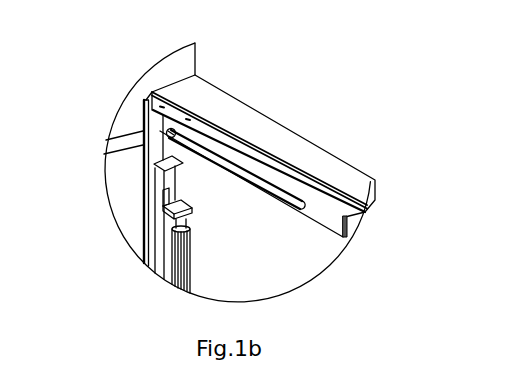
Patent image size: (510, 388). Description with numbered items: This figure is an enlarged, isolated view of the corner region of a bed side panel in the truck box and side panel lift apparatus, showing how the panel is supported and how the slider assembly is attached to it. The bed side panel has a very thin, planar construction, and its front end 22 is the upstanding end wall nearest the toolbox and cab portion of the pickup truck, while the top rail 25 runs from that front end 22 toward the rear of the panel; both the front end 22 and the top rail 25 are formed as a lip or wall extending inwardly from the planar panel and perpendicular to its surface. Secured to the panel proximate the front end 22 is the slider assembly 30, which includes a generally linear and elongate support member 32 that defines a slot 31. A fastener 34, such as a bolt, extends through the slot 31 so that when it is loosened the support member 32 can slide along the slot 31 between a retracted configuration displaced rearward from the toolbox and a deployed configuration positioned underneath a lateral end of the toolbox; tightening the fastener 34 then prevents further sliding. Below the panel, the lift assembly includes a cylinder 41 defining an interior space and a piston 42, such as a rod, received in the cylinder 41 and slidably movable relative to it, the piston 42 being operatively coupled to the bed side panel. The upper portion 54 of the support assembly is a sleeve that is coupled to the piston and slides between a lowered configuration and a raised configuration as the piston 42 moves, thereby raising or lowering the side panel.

The front end 22 is at (152, 143).
The top rail 25 is at (300, 182).
The slider assembly 30 is at (308, 233).
The slot 31 is at (243, 170).
The support member 32 is at (321, 216).
The fastener 34 is at (173, 128).
The cylinder 41 is at (191, 282).
The piston 42 is at (191, 227).
The upper portion 54 is at (153, 192).